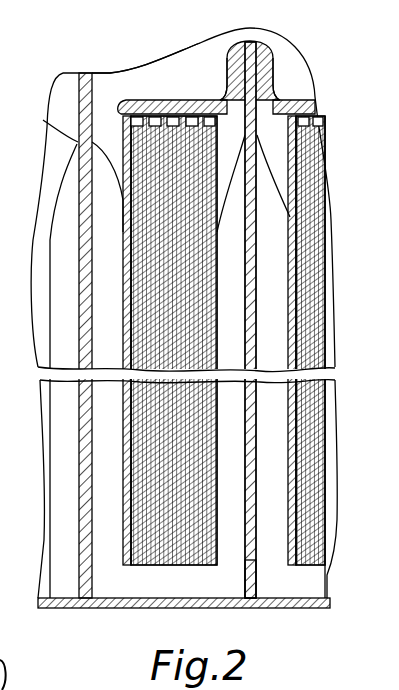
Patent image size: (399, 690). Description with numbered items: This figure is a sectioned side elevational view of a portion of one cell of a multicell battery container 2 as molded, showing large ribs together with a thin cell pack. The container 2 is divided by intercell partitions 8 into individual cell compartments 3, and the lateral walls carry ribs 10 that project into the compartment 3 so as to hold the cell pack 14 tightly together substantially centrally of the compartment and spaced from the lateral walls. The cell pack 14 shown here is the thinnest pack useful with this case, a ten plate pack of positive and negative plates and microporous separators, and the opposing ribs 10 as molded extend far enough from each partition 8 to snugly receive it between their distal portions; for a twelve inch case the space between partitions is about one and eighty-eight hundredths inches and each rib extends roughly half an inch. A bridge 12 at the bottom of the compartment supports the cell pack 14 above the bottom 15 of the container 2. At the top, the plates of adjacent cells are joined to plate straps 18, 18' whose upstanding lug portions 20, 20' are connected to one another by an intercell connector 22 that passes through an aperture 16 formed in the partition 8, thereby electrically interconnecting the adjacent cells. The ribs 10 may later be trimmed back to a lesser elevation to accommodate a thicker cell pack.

The battery container 2 is at (319, 609).
The cell compartment 3 is at (127, 88).
The intercell partition 8 is at (85, 278).
The rib 10 is at (63, 163).
The bridge 12 is at (145, 585).
The cell pack 14 is at (123, 476).
The bottom 15 is at (248, 603).
The aperture 16 is at (262, 95).
The plate strap 18 is at (172, 92).
The plate strap 18' is at (324, 101).
The lug portion 20 is at (206, 65).
The lug portion 20' is at (301, 70).
The intercell connector 22 is at (245, 60).